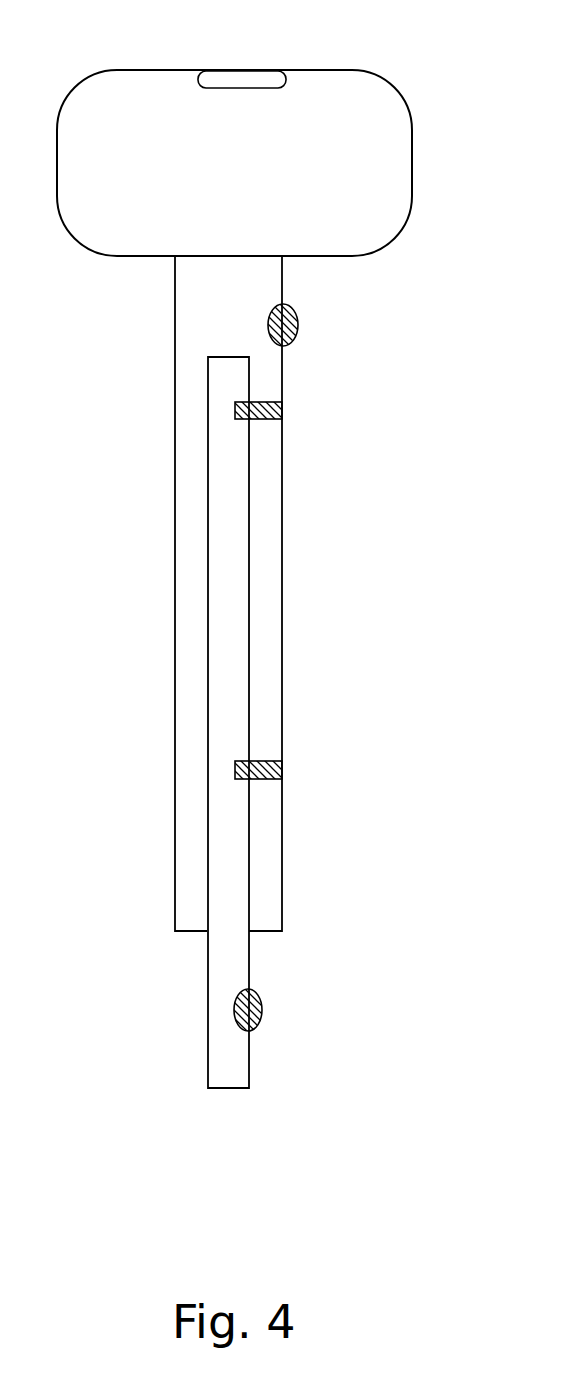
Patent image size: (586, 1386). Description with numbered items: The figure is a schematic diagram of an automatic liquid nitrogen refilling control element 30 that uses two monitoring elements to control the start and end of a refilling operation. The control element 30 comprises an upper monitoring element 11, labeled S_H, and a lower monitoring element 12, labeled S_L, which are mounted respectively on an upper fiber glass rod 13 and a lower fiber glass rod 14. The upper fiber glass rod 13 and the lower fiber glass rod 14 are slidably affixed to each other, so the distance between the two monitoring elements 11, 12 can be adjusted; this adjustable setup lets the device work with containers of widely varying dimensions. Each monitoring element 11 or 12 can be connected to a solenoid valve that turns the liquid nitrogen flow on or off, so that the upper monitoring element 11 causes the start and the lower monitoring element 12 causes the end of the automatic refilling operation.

The automatic liquid nitrogen refilling control element 30 is at (403, 85).
The upper fiber glass rod 13 is at (193, 318).
The lower fiber glass rod 14 is at (207, 985).
The upper monitoring element 11 is at (296, 345).
The lower monitoring element 12 is at (255, 988).